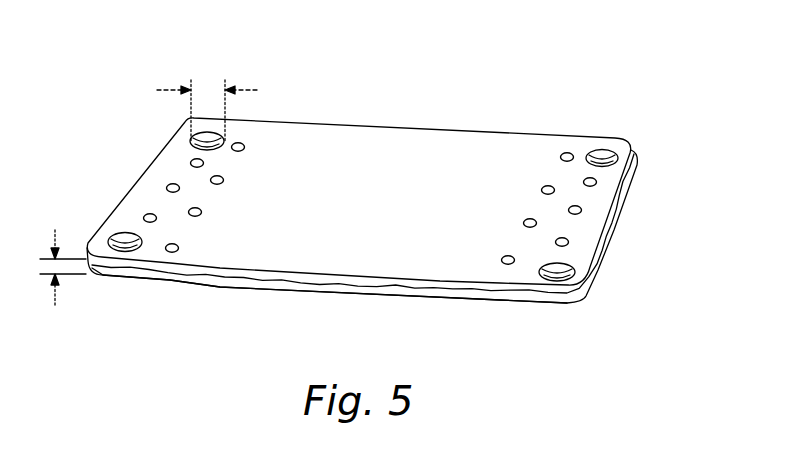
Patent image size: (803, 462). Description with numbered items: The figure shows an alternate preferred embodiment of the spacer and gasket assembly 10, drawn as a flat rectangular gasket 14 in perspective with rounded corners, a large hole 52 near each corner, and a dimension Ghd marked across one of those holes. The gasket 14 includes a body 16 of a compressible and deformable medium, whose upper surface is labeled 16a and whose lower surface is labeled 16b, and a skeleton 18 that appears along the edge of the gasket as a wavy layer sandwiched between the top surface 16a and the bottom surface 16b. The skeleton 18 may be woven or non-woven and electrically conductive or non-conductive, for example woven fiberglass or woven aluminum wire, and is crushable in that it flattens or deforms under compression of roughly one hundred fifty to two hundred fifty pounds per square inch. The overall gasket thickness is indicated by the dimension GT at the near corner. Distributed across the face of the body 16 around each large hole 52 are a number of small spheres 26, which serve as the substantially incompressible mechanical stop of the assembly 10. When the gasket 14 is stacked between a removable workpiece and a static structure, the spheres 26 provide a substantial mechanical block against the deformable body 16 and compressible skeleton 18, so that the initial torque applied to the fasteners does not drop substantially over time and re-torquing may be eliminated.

The spacer and gasket assembly 10 is at (409, 191).
The gasket 14 is at (636, 205).
The body 16 is at (358, 183).
The top surface of gasket 16a is at (374, 209).
The bottom surface of gasket 16b is at (512, 304).
The skeleton 18 is at (611, 234).
The spheres 26 is at (584, 185).
The large mounting hole 52 is at (189, 142).
The hole diameter dimension Ghd is at (207, 83).
The gasket thickness dimension GT is at (45, 265).